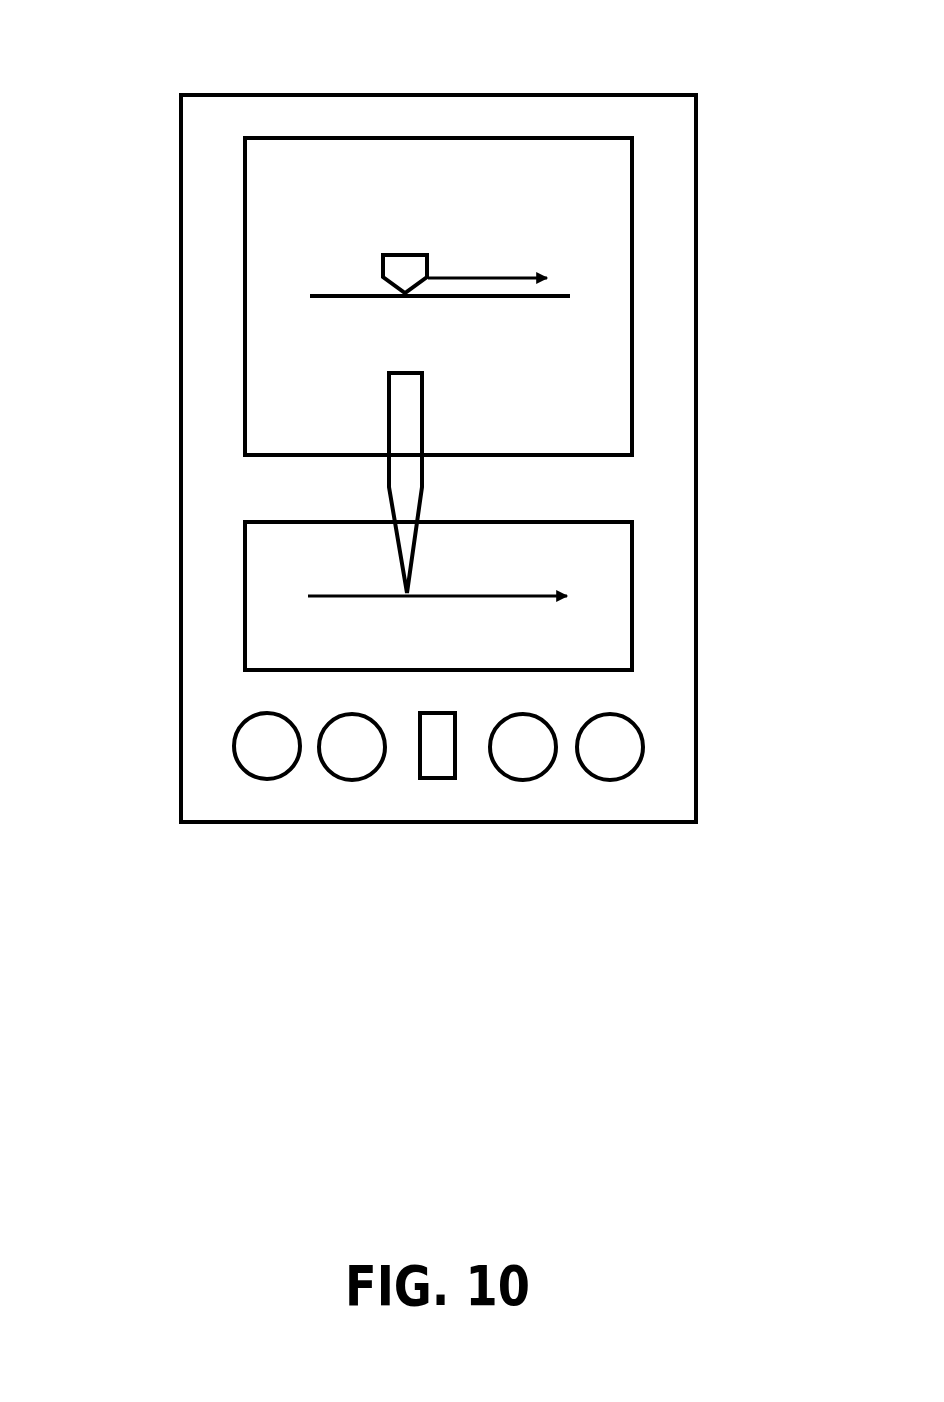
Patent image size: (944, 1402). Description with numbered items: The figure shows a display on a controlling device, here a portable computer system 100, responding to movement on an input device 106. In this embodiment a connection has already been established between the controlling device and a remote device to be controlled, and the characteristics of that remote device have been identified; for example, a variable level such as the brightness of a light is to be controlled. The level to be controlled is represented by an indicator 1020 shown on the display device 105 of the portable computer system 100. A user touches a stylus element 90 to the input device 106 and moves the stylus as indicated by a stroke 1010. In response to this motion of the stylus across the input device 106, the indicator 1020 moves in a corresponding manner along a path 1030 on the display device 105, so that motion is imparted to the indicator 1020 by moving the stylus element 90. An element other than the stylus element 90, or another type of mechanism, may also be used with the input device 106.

The portable computer system 100 is at (262, 92).
The display device 105 is at (243, 176).
The indicator 1020 is at (380, 275).
The path 1030 is at (508, 300).
The stylus element 90 is at (385, 455).
The input device 106 is at (243, 582).
The stroke 1010 is at (368, 598).